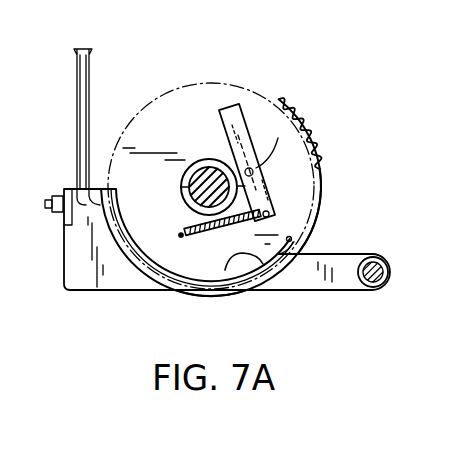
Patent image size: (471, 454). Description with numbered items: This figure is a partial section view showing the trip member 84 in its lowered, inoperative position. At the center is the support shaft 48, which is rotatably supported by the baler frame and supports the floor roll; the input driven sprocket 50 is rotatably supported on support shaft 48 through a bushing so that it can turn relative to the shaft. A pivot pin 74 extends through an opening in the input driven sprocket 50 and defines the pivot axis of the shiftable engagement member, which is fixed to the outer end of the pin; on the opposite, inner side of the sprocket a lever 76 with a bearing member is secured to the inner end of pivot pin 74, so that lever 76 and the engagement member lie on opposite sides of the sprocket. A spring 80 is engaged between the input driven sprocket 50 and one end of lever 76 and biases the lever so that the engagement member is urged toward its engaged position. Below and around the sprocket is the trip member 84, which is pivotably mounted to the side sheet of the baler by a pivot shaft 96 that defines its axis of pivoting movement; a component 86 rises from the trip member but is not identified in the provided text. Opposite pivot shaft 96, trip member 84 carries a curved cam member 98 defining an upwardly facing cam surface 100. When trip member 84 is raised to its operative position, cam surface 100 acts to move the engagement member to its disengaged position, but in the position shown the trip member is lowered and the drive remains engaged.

The support shaft 48 is at (200, 177).
The input driven sprocket 50 is at (200, 97).
The pivot pin 74 is at (255, 162).
The lever 76 is at (240, 138).
The spring 80 is at (222, 243).
The trip member 84 is at (117, 302).
The rod 86 is at (77, 107).
The pivot shaft 96 is at (386, 286).
The curved cam member 98 is at (300, 243).
The cam surface 100 is at (228, 265).